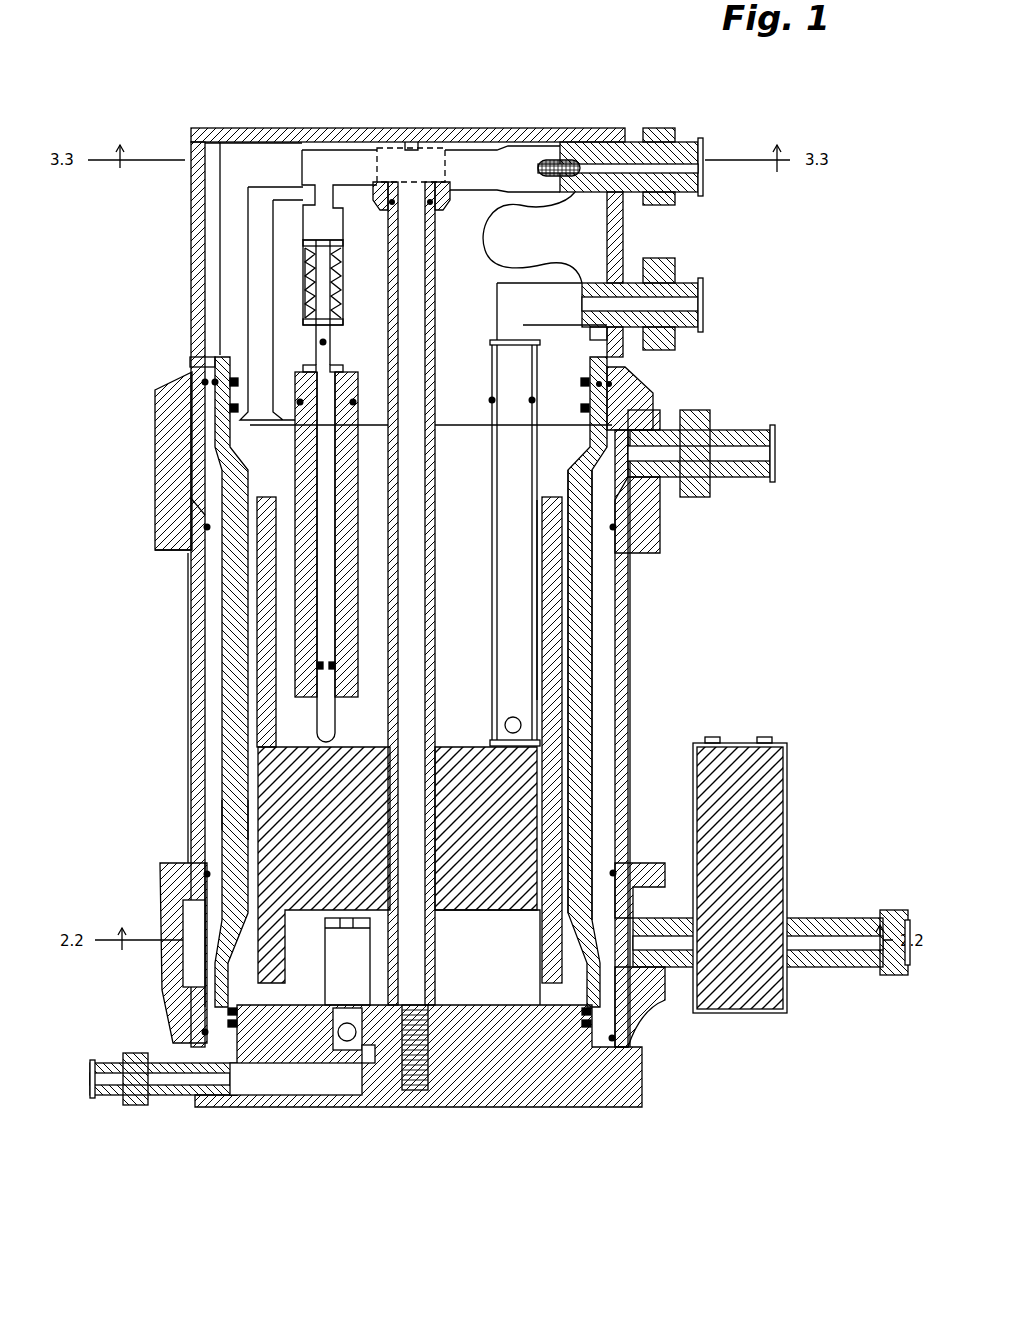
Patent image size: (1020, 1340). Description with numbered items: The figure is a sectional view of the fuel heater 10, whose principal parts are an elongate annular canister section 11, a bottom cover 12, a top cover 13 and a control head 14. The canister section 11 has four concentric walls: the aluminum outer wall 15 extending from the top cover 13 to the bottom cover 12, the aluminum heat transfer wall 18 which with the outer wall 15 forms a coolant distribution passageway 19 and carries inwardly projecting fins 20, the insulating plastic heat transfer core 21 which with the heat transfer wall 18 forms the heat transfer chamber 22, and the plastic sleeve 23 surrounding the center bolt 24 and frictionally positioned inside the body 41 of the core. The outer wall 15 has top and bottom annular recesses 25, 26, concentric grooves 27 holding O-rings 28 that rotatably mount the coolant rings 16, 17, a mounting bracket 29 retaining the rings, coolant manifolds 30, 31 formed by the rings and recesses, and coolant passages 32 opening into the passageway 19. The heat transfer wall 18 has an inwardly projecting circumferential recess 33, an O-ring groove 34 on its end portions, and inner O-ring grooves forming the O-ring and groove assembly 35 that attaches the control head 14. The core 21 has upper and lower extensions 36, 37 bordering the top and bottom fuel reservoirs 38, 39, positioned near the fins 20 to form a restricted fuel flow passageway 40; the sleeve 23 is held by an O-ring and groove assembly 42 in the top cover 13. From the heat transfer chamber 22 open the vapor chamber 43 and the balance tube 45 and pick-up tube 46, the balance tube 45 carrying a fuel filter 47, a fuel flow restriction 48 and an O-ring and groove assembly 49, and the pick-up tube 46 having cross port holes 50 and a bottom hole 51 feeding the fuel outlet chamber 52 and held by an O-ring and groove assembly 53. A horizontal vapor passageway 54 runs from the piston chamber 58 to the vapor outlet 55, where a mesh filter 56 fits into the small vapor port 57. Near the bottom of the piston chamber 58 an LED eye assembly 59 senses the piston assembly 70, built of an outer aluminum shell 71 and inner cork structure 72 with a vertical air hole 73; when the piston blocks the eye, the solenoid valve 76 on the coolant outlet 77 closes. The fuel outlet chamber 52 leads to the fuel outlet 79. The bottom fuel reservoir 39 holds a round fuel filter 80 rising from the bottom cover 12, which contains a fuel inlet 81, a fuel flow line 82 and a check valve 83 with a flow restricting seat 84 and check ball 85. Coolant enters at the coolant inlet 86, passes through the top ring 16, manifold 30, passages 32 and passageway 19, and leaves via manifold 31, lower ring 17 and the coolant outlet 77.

The fuel heater 10 is at (150, 608).
The canister section 11 is at (190, 692).
The bottom cover 12 is at (445, 1122).
The top cover 13 is at (455, 118).
The control head 14 is at (228, 292).
The outer wall 15 is at (198, 664).
The top coolant ring 16 is at (160, 555).
The bottom coolant ring 17 is at (166, 1000).
The heat transfer wall 18 is at (235, 806).
The coolant distribution passageway 19 is at (218, 790).
The fins 20 is at (245, 838).
The heat transfer core 21 is at (273, 770).
The heat transfer chamber 22 is at (245, 470).
The plastic sleeve 23 is at (436, 572).
The center bolt 24 is at (418, 615).
The top annular recess 25 is at (195, 410).
The bottom annular recess 26 is at (185, 960).
The concentric grooves 27 is at (208, 390).
The O-rings 28 is at (203, 382).
The mounting bracket 29 is at (197, 745).
The top coolant manifold 30 is at (182, 445).
The bottom coolant manifold 31 is at (182, 940).
The coolant passages 32 is at (187, 497).
The circumferential recess 33 is at (590, 636).
The O-ring groove 34 is at (645, 395).
The O-ring and groove assembly 35 is at (584, 396).
The upper core extension 36 is at (553, 580).
The lower core extension 37 is at (548, 968).
The top fuel reservoir 38 is at (590, 655).
The bottom fuel reservoir 39 is at (510, 1015).
The restricted fuel flow passageway 40 is at (565, 678).
The body of heat transfer core 41 is at (523, 810).
The O-ring and groove assembly 42 is at (380, 195).
The vapor chamber 43 is at (257, 265).
The balance tube 45 is at (349, 555).
The pick-up tube 46 is at (537, 598).
The fuel filter 47 is at (331, 718).
The fuel flow restriction 48 is at (343, 371).
The O-ring and groove assembly 49 is at (356, 402).
The cross port holes 50 is at (507, 722).
The bottom hole 51 is at (520, 745).
The fuel outlet chamber 52 is at (513, 332).
The O-ring and groove assembly 53 is at (500, 437).
The horizontal vapor passageway 54 is at (333, 165).
The vapor outlet 55 is at (640, 140).
The mesh filter 56 is at (560, 162).
The vapor port 57 is at (700, 170).
The piston chamber 58 is at (330, 226).
The LED eye assembly 59 is at (326, 342).
The piston assembly 70 is at (336, 243).
The outer aluminum shell 71 is at (345, 323).
The inner cork structure 72 is at (312, 262).
The air hole 73 is at (323, 243).
The solenoid valve 76 is at (765, 786).
The coolant outlet 77 is at (672, 918).
The fuel outlet 79 is at (688, 282).
The round fuel filter 80 is at (340, 983).
The fuel inlet 81 is at (115, 1090).
The fuel flow line 82 is at (285, 1088).
The check valve 83 is at (332, 1035).
The flow restricting seat 84 is at (370, 1063).
The check ball 85 is at (346, 1042).
The coolant inlet 86 is at (762, 428).